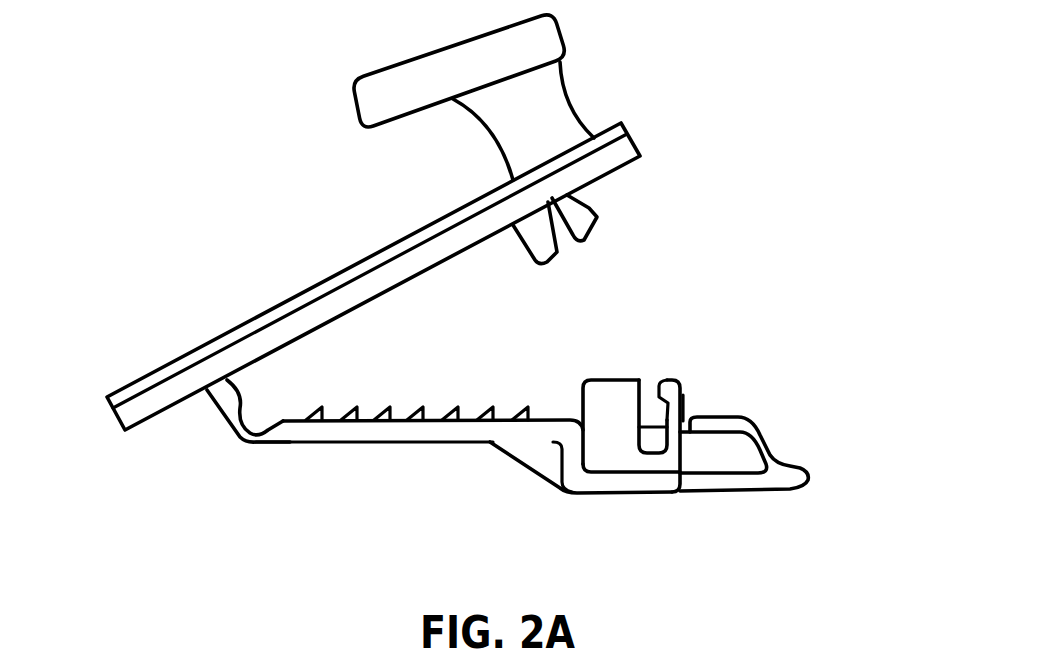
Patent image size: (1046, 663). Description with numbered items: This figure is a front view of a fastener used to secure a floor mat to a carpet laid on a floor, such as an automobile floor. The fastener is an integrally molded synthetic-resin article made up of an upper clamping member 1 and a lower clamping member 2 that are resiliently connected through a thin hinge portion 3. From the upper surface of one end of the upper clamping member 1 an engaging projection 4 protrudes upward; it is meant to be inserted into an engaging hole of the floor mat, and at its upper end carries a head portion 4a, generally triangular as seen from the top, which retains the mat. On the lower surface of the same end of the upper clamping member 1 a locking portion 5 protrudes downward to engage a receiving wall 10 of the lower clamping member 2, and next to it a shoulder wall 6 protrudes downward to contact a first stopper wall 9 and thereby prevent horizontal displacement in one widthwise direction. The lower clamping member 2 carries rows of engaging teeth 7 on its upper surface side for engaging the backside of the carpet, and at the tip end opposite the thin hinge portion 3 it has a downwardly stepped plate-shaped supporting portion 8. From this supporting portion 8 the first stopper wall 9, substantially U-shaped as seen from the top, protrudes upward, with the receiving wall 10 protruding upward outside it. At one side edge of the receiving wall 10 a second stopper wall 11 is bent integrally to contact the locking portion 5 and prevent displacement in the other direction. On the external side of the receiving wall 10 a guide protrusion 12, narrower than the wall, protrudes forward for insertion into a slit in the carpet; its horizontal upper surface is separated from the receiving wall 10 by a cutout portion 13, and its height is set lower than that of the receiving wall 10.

The upper clamping member 1 is at (163, 388).
The lower clamping member 2 is at (380, 430).
The thin hinge portion 3 is at (242, 441).
The engaging projection 4 is at (549, 100).
The head portion 4a is at (395, 78).
The locking portion 5 is at (599, 216).
The shoulder wall 6 is at (540, 237).
The engaging teeth 7 is at (421, 407).
The supporting portion 8 is at (618, 483).
The first stopper wall 9 is at (594, 393).
The receiving wall 10 is at (687, 397).
The second stopper wall 11 is at (648, 392).
The guide protrusion 12 is at (744, 483).
The cutout portion 13 is at (685, 432).